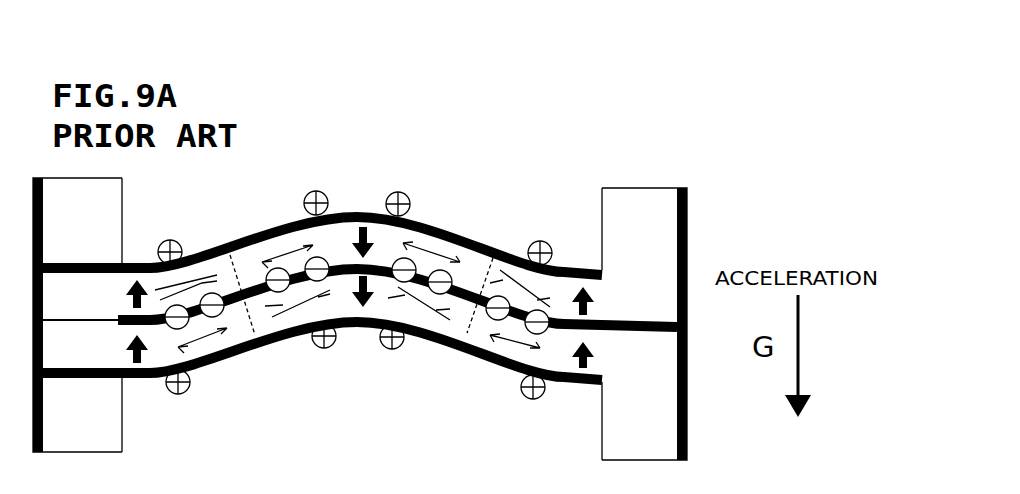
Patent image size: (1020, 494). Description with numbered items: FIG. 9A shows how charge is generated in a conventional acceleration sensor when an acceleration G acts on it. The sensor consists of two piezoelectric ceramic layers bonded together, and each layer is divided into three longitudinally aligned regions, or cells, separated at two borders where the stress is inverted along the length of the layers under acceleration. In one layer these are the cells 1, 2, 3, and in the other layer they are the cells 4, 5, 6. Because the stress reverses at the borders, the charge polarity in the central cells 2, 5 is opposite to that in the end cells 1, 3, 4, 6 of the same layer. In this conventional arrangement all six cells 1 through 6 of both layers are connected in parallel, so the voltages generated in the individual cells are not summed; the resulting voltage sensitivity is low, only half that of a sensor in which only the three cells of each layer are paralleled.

The cell 1 is at (118, 294).
The cell 2 is at (350, 242).
The cell 3 is at (598, 301).
The cell 4 is at (118, 349).
The cell 5 is at (352, 295).
The cell 6 is at (598, 355).